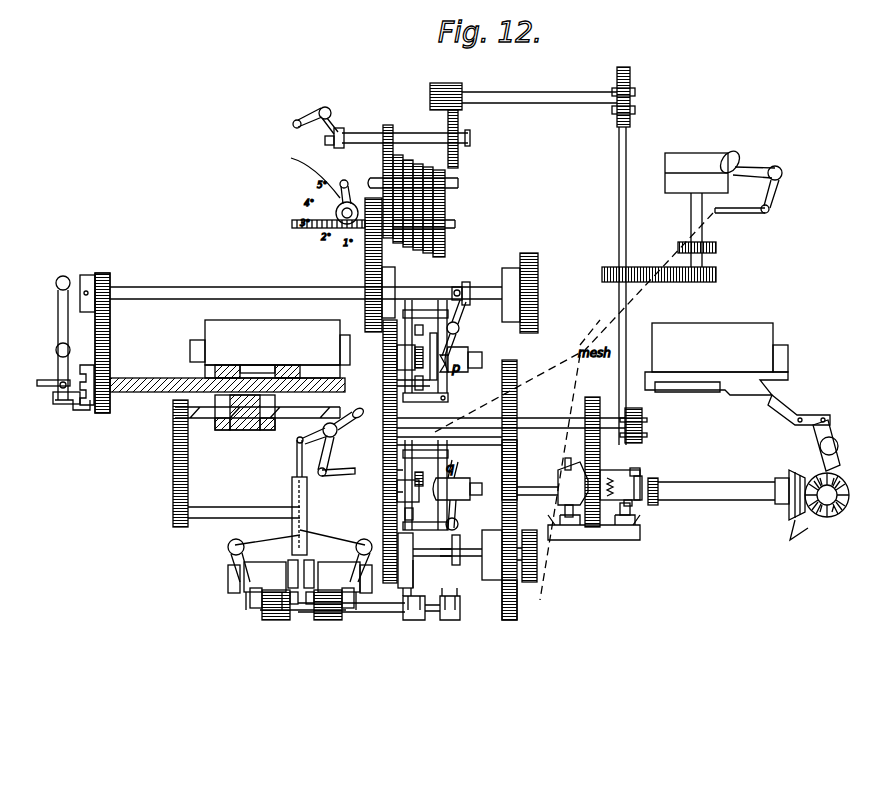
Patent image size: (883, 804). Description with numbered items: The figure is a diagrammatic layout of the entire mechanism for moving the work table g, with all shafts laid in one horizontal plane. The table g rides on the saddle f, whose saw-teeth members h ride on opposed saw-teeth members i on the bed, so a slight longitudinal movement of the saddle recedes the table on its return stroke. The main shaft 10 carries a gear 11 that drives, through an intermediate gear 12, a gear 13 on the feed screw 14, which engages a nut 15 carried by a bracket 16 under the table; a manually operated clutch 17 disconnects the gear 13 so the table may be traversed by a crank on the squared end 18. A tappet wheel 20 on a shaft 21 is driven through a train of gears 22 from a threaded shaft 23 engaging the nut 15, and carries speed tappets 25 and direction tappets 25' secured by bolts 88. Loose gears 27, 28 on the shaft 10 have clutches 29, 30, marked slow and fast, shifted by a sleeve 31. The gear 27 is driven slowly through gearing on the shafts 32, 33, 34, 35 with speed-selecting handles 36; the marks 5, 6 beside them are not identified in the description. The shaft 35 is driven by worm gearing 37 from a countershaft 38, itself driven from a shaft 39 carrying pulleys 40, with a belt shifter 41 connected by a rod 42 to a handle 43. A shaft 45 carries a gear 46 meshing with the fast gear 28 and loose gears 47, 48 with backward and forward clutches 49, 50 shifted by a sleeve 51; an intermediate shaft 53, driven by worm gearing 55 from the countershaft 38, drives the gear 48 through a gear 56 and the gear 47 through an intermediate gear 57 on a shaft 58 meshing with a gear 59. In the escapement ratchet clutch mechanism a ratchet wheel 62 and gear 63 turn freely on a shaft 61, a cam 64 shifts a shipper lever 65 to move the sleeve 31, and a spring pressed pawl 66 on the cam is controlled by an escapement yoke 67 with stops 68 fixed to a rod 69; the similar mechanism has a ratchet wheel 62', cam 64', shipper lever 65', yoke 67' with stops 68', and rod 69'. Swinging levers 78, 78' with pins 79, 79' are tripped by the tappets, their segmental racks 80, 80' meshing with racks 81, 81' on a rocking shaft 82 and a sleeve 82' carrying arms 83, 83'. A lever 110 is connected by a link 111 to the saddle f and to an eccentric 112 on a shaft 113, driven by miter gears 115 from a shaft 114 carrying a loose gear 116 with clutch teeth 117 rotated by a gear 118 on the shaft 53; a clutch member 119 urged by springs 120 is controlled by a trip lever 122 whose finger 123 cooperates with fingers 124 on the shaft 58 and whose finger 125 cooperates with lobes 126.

The lever 5 is at (297, 118).
The pawl 6 is at (347, 193).
The main shaft 10 is at (225, 294).
The gear 11 is at (104, 272).
The intermediate gear 12 is at (110, 340).
The gear 13 is at (100, 410).
The feed screw 14 is at (150, 392).
The nut 15 is at (240, 432).
The bracket 16 is at (220, 431).
The manually operated clutch 17 is at (68, 405).
The outer squared end 18 is at (42, 387).
The tappet wheel 20 is at (292, 491).
The shaft 21 is at (218, 517).
The train of gears 22 is at (172, 455).
The shaft 23 is at (290, 420).
The tappets 25 is at (263, 566).
The tappets 25' is at (338, 566).
The gear 27 is at (365, 270).
The gear 28 is at (538, 268).
The clutch 29 is at (398, 285).
The clutch 30 is at (510, 268).
The sleeve 31 is at (460, 282).
The shaft 32 is at (455, 220).
The shaft 33 is at (460, 183).
The shaft 34 is at (466, 138).
The shaft 35 is at (530, 104).
The controlling handles 36 is at (300, 138).
The worm gearing 37 is at (628, 90).
The countershaft 38 is at (627, 222).
The shaft 39 is at (703, 232).
The pulleys 40 is at (666, 180).
The belt shifter 41 is at (760, 168).
The rod 42 is at (762, 216).
The handle 43 is at (338, 448).
The shaft 45 is at (470, 562).
The gear 46 is at (538, 576).
The gear 47 is at (390, 612).
The gear 48 is at (506, 620).
The clutch 49 is at (410, 622).
The clutch 50 is at (490, 582).
The sleeve 51 is at (462, 545).
The intermediate shaft 53 is at (545, 418).
The worm gearing 55 is at (642, 440).
The gear 56 is at (518, 462).
The intermediate gear 57 is at (383, 504).
The shaft 58 is at (558, 490).
The gear 59 is at (383, 420).
The shaft 61 is at (476, 353).
The ratchet wheel 62 is at (396, 357).
The ratchet wheel 62' is at (410, 487).
The gear 63 is at (397, 364).
The cam 64 is at (461, 370).
The cam 64' is at (467, 482).
The shipper lever 65 is at (466, 328).
The shipper lever 65' is at (470, 495).
The spring pressed pawl 66 is at (397, 383).
The escapement yoke 67 is at (425, 333).
The escapement yoke 67' is at (445, 485).
The stops 68 is at (392, 370).
The stops 68' is at (384, 517).
The rod 69 is at (511, 412).
The rod 69' is at (449, 437).
The swinging lever 78 is at (247, 603).
The swinging lever 78' is at (346, 609).
The pin 79 is at (290, 614).
The pin 79' is at (316, 614).
The segmental rack 80 is at (265, 616).
The segmental rack 80' is at (328, 621).
The rack 81 is at (264, 628).
The segmental rack 81' is at (350, 628).
The rocking shaft 82 is at (281, 638).
The sleeve 82' is at (340, 638).
The arm 83 is at (442, 621).
The arm 83' is at (399, 617).
The bolts 88 is at (300, 560).
The lever 110 is at (836, 428).
The link 111 is at (815, 413).
The eccentric 112 is at (850, 494).
The shaft 113 is at (835, 512).
The shaft 114 is at (722, 500).
The miter gears 115 is at (812, 540).
The gear 116 is at (620, 478).
The clutch member 117 is at (598, 540).
The gear 118 is at (590, 397).
The clutch member 119 is at (632, 468).
The springs 120 is at (658, 482).
The trip lever 122 is at (620, 526).
The finger 123 is at (562, 525).
The fingers 124 is at (560, 472).
The finger 125 is at (634, 508).
The lobes 126 is at (655, 466).
The saddle f is at (190, 355).
The work table g is at (277, 349).
The saw-teeth members h is at (678, 382).
The saw-teeth member i is at (740, 384).